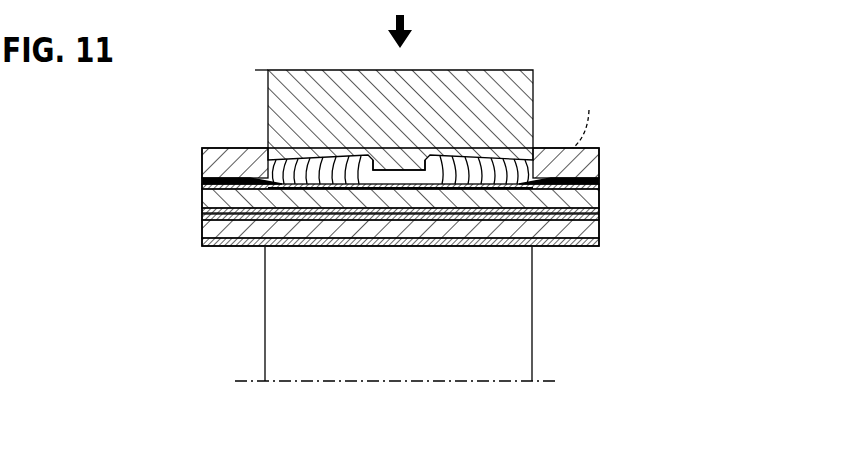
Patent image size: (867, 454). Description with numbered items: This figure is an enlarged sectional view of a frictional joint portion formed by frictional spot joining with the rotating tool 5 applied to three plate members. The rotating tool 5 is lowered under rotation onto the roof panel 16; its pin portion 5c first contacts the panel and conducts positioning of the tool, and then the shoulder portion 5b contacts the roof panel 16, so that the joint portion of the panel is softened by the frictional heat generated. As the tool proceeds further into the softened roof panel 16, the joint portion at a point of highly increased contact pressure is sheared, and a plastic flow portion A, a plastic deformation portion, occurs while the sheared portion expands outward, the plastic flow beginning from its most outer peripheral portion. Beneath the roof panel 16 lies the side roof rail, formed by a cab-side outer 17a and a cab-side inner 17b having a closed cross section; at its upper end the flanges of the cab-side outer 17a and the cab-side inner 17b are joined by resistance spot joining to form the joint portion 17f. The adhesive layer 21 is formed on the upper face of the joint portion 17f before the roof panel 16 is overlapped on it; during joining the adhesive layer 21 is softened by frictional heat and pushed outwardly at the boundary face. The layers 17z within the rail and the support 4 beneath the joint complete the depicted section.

The rotating tool 5 is at (533, 78).
The shoulder portion 5b is at (322, 160).
The pin portion 5c is at (400, 170).
The roof panel 16 is at (600, 164).
The adhesive layer 21 is at (202, 179).
The adhesive layers 17z is at (202, 241).
The cab-side outer 17a is at (600, 197).
The cab-side inner 17b is at (600, 232).
The joint portion 17f is at (706, 188).
The plastic flow portion A is at (586, 115).
The base / support 4 is at (505, 299).